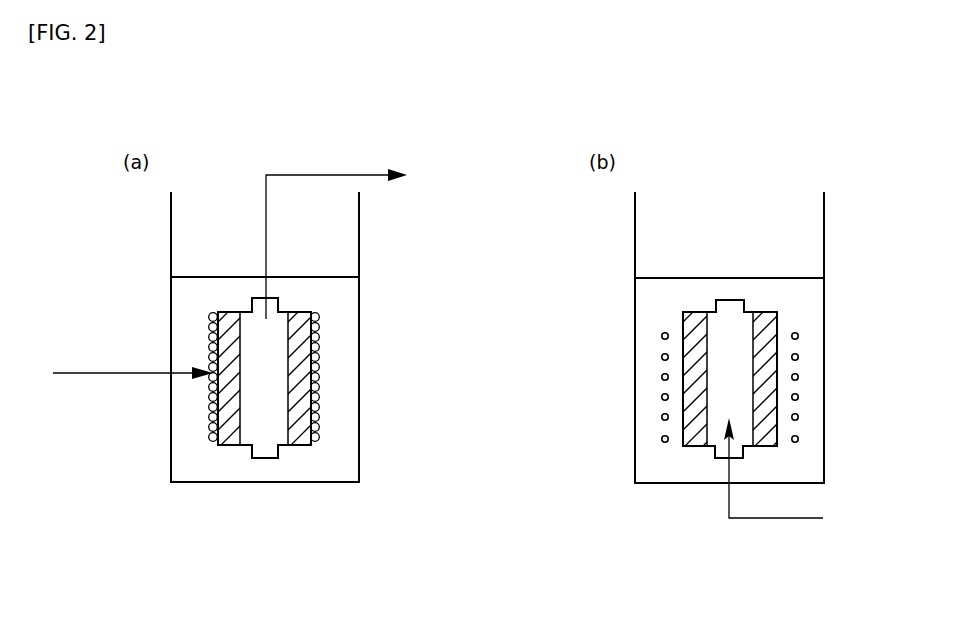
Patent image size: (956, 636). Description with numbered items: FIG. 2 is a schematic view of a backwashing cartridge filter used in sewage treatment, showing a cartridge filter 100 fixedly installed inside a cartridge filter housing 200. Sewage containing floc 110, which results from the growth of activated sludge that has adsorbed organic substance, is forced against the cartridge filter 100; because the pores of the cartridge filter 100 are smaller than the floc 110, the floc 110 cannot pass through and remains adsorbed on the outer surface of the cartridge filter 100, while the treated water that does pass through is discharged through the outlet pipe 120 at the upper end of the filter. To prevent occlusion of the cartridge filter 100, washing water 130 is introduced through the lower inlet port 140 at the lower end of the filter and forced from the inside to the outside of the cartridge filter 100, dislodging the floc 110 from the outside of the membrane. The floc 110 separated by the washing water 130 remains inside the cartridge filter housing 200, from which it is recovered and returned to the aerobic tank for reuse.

The cartridge filter 100 is at (230, 433).
The floc 110 is at (320, 318).
The outlet pipe 120 is at (337, 175).
The washing water 130 is at (272, 302).
The lower inlet port 140 is at (744, 452).
The cartridge filter housing 200 is at (303, 482).